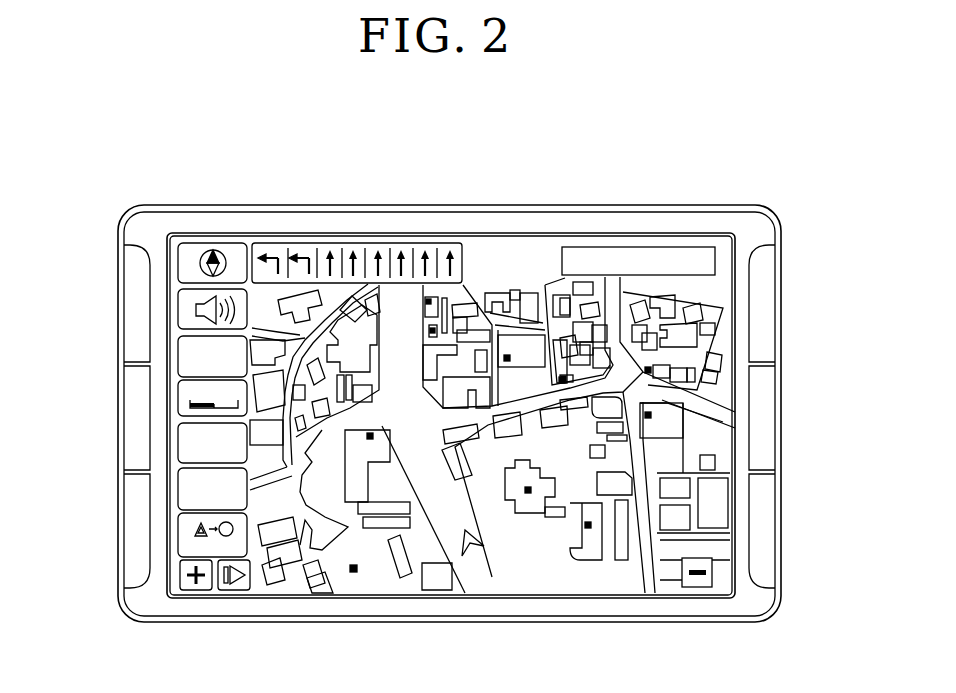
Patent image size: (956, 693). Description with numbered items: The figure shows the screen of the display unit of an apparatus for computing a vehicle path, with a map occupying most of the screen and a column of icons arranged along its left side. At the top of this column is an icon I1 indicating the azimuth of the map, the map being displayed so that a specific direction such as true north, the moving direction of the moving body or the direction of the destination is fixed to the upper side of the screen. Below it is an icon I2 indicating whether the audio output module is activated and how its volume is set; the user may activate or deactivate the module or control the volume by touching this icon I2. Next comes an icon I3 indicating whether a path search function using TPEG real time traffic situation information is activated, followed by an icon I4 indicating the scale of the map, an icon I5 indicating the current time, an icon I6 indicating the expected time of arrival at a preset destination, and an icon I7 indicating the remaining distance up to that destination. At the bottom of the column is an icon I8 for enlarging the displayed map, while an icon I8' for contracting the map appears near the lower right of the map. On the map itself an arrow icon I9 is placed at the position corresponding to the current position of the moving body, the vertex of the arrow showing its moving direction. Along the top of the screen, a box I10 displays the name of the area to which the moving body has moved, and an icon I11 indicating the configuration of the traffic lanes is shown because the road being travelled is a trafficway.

The icon indicating an azimuth of a map I1 is at (178, 263).
The icon indicating activation of audio output module and volume setting I2 is at (178, 309).
The icon indicating activation of TPEG path search function I3 is at (178, 355).
The icon indicating a scale of the map I4 is at (178, 397).
The icon indicating a current time I5 is at (178, 442).
The icon indicating an expected time of arrival I6 is at (178, 487).
The icon indicating a remaining distance I7 is at (178, 530).
The icon for enlarging the displayed map I8 is at (161, 575).
The icon for contracting the displayed map I8' is at (697, 618).
The icon indicating a position and a moving direction of a moving body I9 is at (466, 550).
The place name indicator I10 is at (642, 247).
The icon indicating a configuration of traffic lanes I11 is at (357, 243).